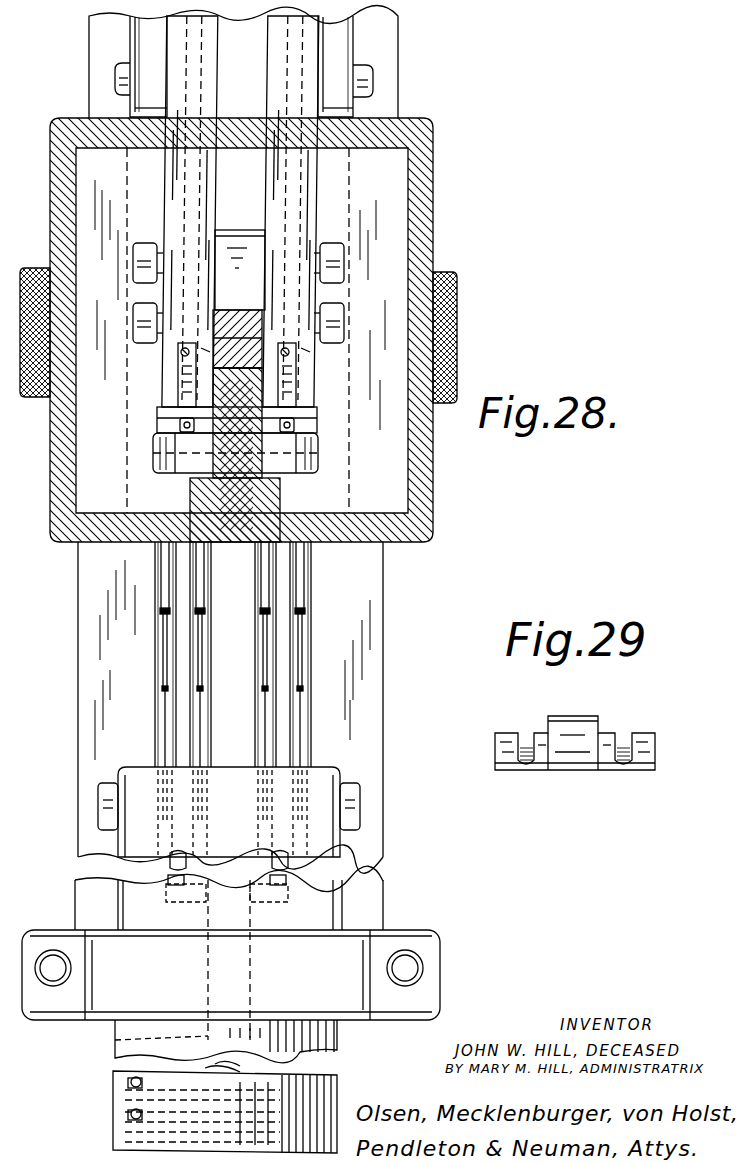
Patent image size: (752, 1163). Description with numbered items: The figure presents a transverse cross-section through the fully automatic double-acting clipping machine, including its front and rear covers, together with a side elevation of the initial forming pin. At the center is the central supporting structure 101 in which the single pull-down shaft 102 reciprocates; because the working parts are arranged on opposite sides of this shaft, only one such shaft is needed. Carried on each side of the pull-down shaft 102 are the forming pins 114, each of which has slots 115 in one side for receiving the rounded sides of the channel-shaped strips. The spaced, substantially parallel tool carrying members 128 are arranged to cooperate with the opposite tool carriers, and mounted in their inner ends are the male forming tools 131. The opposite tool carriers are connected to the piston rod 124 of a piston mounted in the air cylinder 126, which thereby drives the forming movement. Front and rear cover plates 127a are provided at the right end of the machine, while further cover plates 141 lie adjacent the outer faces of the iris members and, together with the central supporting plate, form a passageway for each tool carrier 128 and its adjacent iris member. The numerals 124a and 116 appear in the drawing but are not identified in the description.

In FIG. 28, the upper mounting plates with bolts 127a is at (142, 42).
In FIG. 28, the upper block 101 is at (247, 320).
In FIG. 28, the lower block 102 is at (247, 390).
In FIG. 28, the rod ends in lower clamp 131 is at (165, 800).
In FIG. 28, the lower clamp bar with bolts 141 is at (130, 830).
In FIG. 28, the break line / plate section 128 is at (168, 867).
In FIG. 28, the plate portion 124a is at (265, 880).
In FIG. 28, the block below housing 126 is at (115, 1036).
In FIG. 28, the bottom knurled member 124 is at (115, 1048).
In FIG. 29, the left end of strip 115 is at (525, 745).
In FIG. 29, the grooves 114 is at (527, 745).
In FIG. 29, the right end of strip 116 is at (640, 745).